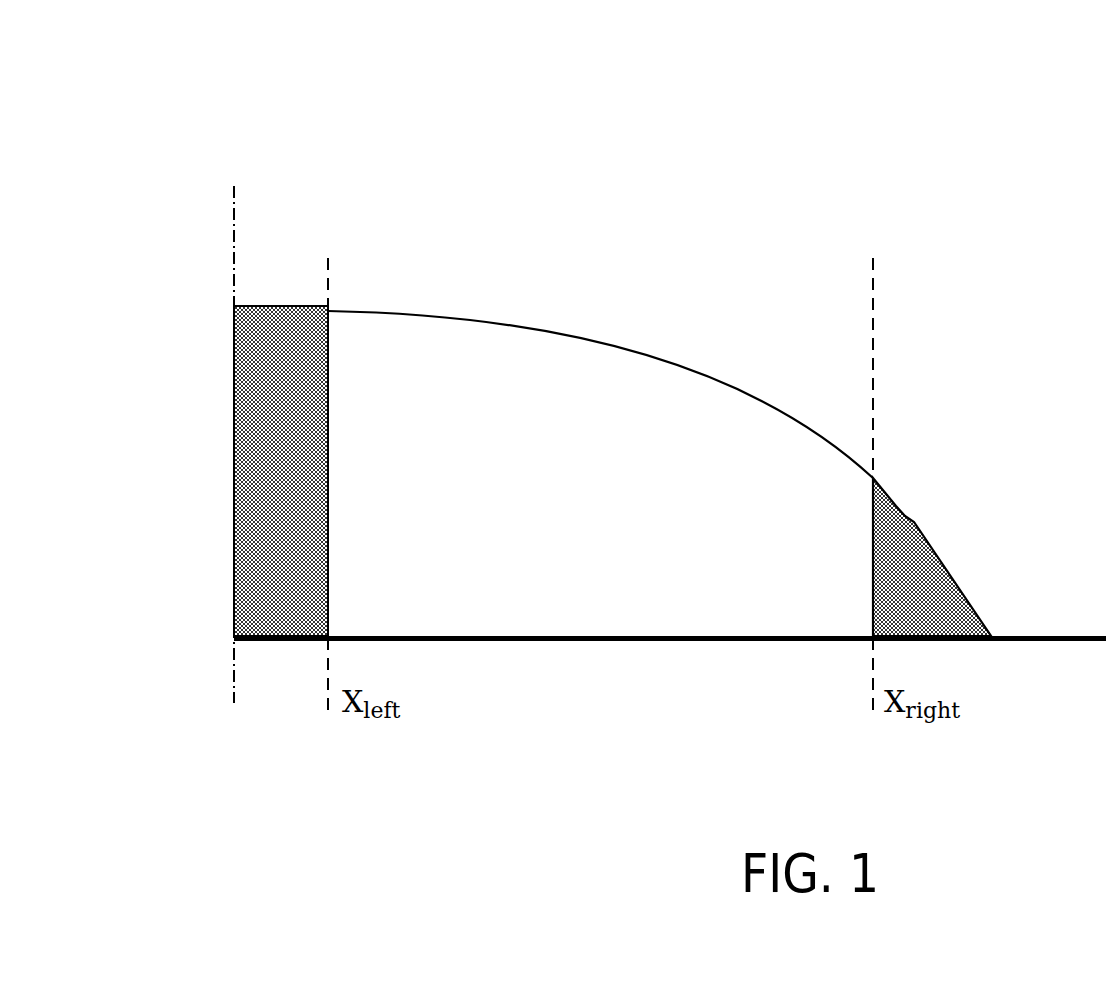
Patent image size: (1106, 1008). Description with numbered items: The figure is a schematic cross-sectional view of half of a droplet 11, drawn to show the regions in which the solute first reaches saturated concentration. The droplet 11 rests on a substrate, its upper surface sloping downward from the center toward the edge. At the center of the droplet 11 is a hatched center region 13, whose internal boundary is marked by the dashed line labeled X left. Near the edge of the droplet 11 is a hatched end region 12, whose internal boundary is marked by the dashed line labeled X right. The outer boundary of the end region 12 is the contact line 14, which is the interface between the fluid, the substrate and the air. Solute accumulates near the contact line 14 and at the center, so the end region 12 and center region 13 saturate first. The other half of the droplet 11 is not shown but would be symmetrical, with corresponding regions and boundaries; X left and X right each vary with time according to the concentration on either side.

The droplet 11 is at (676, 156).
The end region 12 is at (930, 546).
The center region 13 is at (234, 506).
The contact line 14 is at (992, 634).